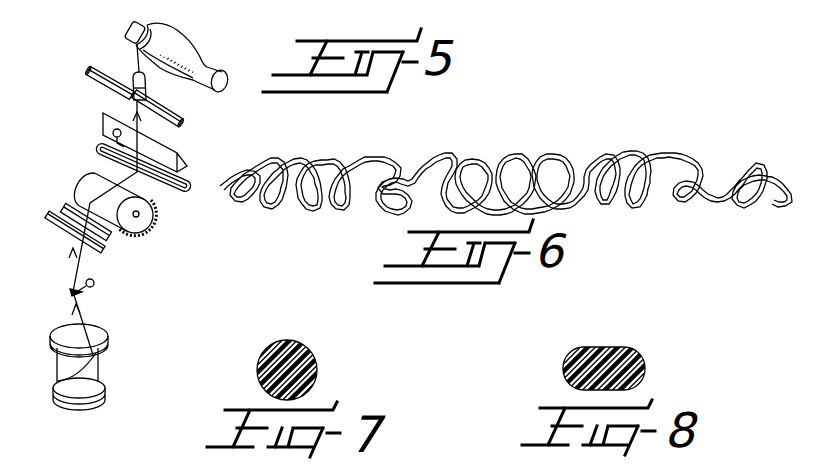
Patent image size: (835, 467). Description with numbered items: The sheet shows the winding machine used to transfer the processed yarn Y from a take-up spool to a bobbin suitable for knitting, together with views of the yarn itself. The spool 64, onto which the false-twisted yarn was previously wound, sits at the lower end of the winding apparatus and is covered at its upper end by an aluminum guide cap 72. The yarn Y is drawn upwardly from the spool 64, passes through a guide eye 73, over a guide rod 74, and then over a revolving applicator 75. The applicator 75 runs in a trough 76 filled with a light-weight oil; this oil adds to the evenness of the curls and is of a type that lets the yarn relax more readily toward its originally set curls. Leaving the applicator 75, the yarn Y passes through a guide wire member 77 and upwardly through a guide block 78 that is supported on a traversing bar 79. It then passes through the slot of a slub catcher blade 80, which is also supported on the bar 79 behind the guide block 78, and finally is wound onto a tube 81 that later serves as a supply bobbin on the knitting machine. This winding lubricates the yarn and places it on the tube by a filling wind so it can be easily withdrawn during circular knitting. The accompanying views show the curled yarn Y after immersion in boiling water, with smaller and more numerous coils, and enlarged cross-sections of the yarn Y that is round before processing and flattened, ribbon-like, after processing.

In FIG. 5, the tube 81 is at (128, 27).
In FIG. 5, the slub catcher blade 80 is at (134, 76).
In FIG. 5, the guide block 78 is at (114, 92).
In FIG. 5, the traversing bar 79 is at (170, 108).
In FIG. 5, the guide wire member 77 is at (100, 147).
In FIG. 5, the revolving applicator 75 is at (80, 187).
In FIG. 5, the trough 76 is at (147, 233).
In FIG. 5, the guide rod 74 is at (68, 238).
In FIG. 5, the guide eye 73 is at (91, 290).
In FIG. 5, the aluminum guide cap 72 is at (104, 334).
In FIG. 5, the spool 64 is at (100, 377).
In FIG. 5, the yarn Y is at (78, 272).
In FIG. 6, the yarn Y is at (583, 165).
In FIG. 7, the yarn Y is at (302, 345).
In FIG. 8, the yarn Y is at (616, 348).